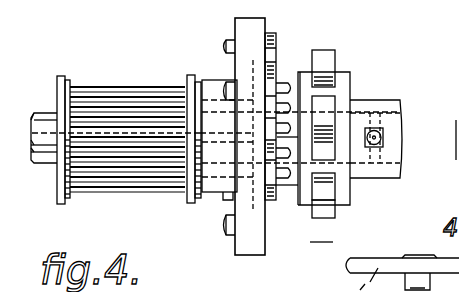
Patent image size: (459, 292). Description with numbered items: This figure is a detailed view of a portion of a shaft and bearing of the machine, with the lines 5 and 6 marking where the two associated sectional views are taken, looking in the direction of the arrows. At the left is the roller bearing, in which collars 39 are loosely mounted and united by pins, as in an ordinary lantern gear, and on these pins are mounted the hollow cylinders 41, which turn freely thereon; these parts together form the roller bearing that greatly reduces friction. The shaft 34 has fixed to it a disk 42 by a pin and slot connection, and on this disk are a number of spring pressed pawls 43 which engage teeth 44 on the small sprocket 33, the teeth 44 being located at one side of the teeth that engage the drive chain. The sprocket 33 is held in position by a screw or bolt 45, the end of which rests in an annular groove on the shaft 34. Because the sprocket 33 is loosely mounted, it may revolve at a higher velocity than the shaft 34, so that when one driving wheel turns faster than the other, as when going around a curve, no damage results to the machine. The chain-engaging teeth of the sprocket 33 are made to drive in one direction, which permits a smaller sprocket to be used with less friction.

The section line 5— 5 is at (167, 45).
The section line 6— 6 is at (287, 37).
The small sprocket 33 is at (346, 68).
The shaft 34 is at (52, 168).
The collars 39 is at (72, 82).
The hollow cylinders 41 is at (145, 85).
The disk 42 is at (235, 30).
The spring pressed pawls 43 is at (327, 32).
The teeth 44 is at (287, 79).
The screw or bolt 45 is at (383, 134).